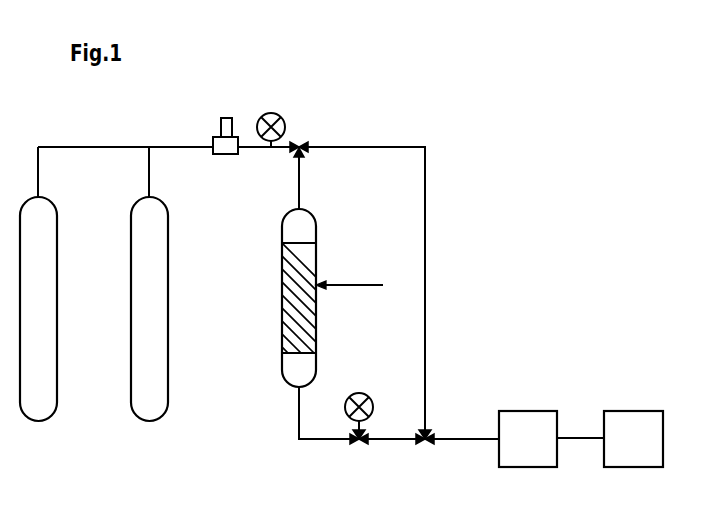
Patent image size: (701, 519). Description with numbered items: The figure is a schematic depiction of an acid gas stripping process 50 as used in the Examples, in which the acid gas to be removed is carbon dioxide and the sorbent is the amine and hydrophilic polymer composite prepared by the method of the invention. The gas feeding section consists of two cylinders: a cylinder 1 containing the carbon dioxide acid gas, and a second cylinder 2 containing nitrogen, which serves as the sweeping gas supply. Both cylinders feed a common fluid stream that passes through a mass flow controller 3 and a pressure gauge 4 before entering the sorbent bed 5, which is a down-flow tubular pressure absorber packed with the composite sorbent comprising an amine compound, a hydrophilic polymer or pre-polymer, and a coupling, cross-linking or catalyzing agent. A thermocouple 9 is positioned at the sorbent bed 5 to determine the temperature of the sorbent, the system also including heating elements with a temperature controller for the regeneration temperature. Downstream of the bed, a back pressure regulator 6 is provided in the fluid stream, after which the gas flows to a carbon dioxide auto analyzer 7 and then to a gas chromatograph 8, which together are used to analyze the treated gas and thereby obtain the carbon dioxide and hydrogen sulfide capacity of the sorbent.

The cylinder 1 is at (31, 312).
The cylinder 2 is at (142, 312).
The mass flow controller 3 is at (223, 154).
The pressure gauge 4 is at (273, 113).
The sorbent bed 5 is at (292, 307).
The back pressure regulator 6 is at (360, 448).
The CO2 auto analyzer 7 is at (515, 449).
The gas chromatograph 8 is at (618, 449).
The thermocouple 9 is at (350, 284).
The acid gas stripping process 50 is at (422, 96).